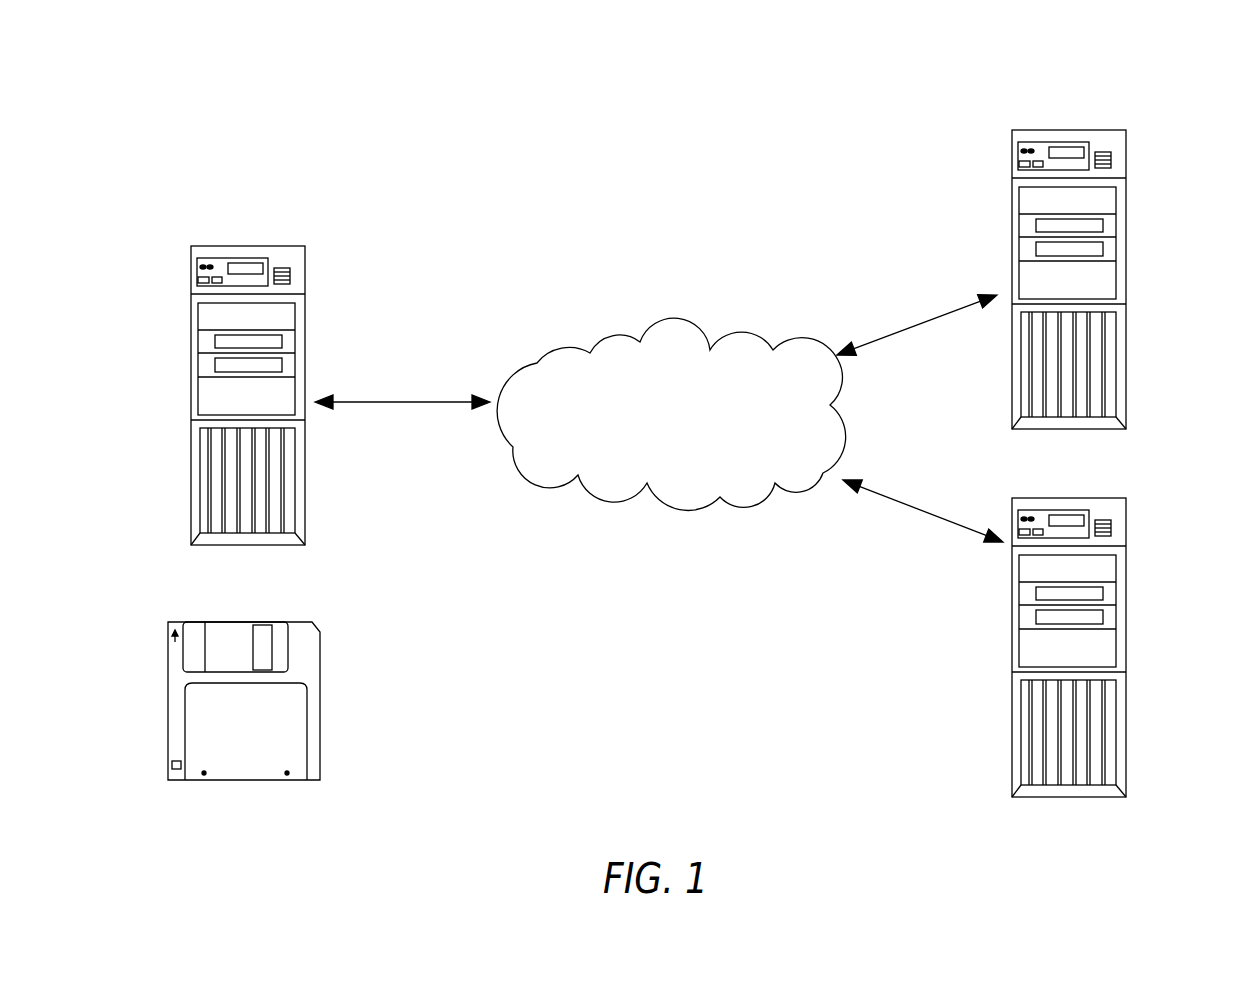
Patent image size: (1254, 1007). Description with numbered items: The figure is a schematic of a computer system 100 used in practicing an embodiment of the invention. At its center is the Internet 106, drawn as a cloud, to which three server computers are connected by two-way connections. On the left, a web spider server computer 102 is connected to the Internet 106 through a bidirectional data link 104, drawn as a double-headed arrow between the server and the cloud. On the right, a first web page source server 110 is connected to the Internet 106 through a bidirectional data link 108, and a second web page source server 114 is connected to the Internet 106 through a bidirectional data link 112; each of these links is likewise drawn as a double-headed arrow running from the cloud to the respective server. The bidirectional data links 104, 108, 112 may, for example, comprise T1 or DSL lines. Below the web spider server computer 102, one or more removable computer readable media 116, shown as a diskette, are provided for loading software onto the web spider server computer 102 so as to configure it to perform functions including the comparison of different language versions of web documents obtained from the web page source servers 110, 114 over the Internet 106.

The computer system 100 is at (705, 160).
The web spider server computer 102 is at (240, 247).
The bidirectional data link 104 is at (393, 398).
The Internet 106 is at (677, 317).
The bidirectional data link 108 is at (870, 340).
The first web page source server 110 is at (1038, 123).
The bidirectional data link 112 is at (933, 517).
The second web page source server 114 is at (1125, 662).
The removable computer readable media 116 is at (322, 677).